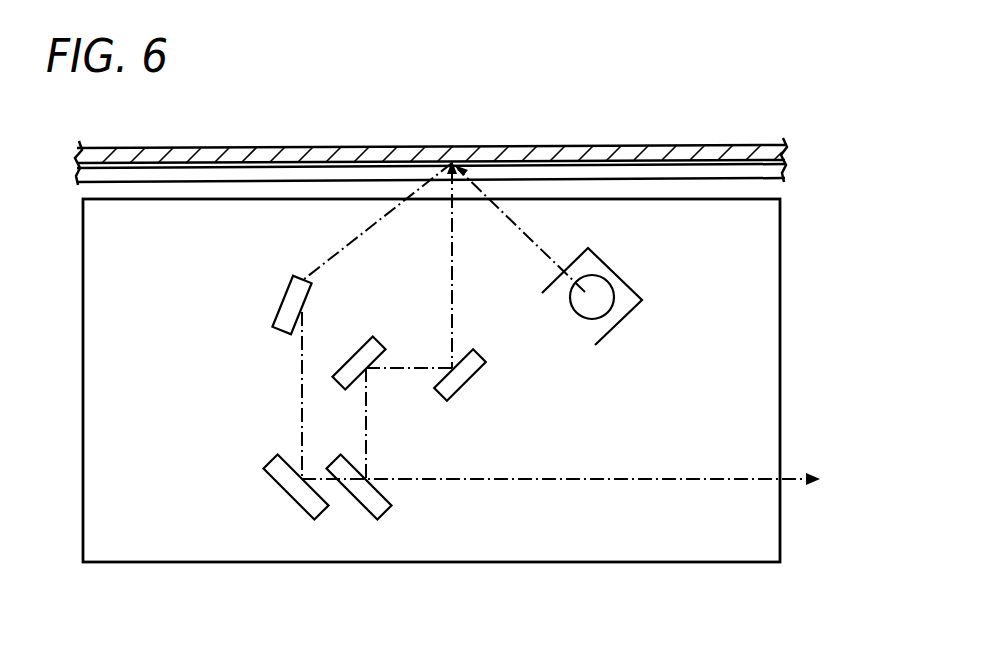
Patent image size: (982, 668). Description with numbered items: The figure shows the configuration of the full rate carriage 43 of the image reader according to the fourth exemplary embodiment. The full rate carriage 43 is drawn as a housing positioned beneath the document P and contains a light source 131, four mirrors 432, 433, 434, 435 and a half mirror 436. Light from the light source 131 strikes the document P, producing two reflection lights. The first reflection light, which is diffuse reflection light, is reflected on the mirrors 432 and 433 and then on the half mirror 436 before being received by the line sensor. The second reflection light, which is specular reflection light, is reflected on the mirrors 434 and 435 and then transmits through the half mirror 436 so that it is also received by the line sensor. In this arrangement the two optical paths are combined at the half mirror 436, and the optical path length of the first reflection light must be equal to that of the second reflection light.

The recording medium (paper) P is at (601, 146).
The full rate carriage 43 is at (792, 299).
The light source 131 is at (613, 270).
The mirror 432 is at (484, 364).
The mirror 433 is at (375, 335).
The mirror 434 is at (280, 308).
The mirror 435 is at (277, 453).
The half mirror 436 is at (392, 506).